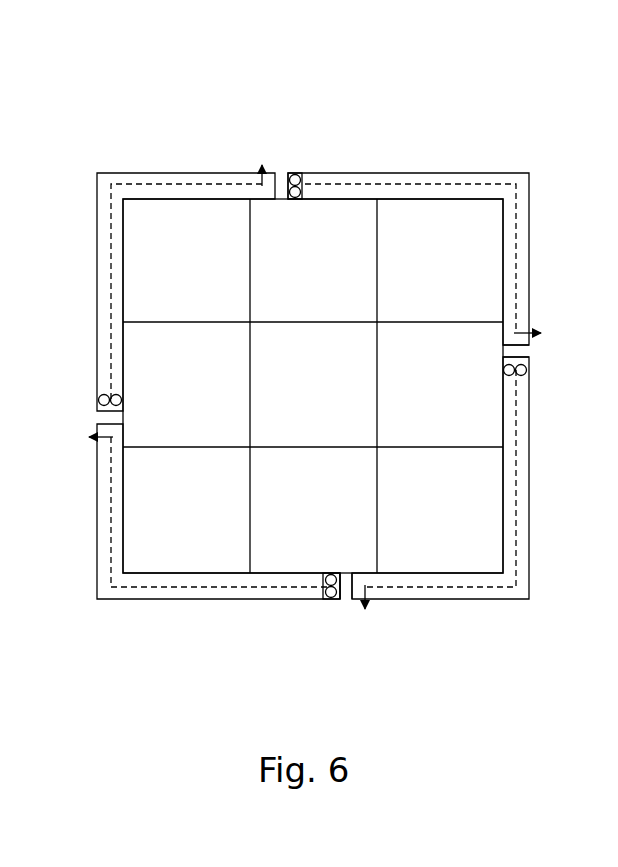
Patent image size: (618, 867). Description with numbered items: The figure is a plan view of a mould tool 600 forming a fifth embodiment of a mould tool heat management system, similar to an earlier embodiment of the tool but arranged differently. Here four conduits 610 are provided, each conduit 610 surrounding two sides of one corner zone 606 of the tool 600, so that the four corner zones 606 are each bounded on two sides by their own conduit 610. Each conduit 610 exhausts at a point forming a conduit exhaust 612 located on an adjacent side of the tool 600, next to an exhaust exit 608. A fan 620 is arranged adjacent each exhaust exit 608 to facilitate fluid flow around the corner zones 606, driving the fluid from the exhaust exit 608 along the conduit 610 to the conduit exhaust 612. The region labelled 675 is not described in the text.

The tool 600 is at (78, 170).
The corner zone 606 is at (206, 280).
The exhaust exit 608 is at (548, 383).
The conduit 610 is at (172, 600).
The conduit exhaust 612 is at (365, 622).
The fan 620 is at (298, 174).
The frame segment (top right) 675 is at (380, 185).